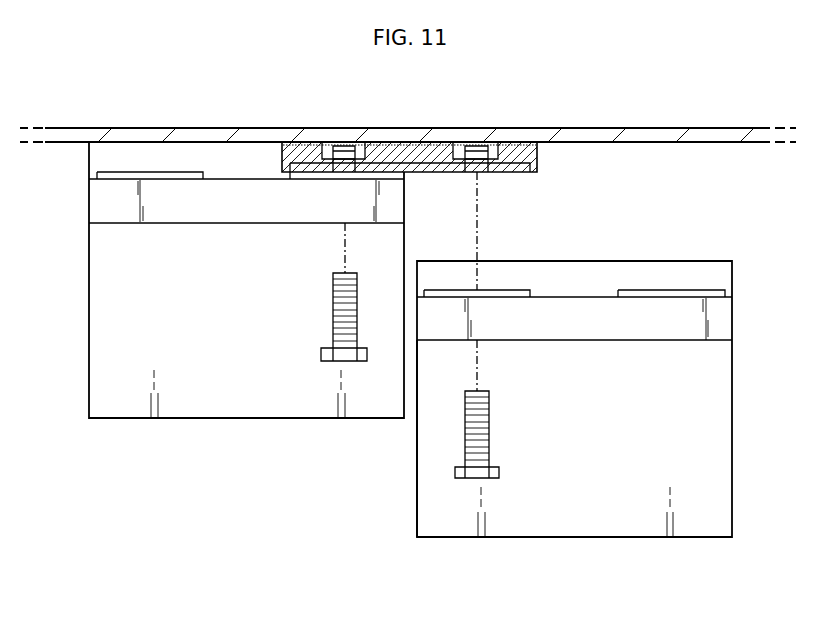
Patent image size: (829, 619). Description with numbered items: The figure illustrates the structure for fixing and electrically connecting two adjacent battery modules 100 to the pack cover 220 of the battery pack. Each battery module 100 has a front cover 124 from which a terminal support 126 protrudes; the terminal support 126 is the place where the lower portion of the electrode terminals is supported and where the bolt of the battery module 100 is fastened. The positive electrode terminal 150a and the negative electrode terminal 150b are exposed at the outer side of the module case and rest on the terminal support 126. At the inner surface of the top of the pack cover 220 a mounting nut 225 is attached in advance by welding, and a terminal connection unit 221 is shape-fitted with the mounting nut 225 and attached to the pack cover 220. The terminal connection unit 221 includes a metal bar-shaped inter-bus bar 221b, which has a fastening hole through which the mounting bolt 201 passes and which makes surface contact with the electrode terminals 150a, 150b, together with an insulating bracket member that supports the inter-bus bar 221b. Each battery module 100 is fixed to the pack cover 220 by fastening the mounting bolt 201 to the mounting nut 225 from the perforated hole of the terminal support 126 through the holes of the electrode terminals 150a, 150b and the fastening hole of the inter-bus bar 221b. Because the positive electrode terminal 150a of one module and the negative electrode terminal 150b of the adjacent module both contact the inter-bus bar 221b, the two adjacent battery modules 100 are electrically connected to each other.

The battery module 100 is at (156, 434).
The front cover 124 is at (724, 438).
The terminal support 126 is at (724, 320).
The positive electrode terminal 150a is at (312, 176).
The negative electrode terminal 150b is at (510, 290).
The mounting bolt 201 is at (491, 434).
The pack cover 220 is at (682, 128).
The terminal connection unit 221 is at (412, 150).
The inter-bus bar 221b is at (517, 170).
The mounting nut 225 is at (356, 145).